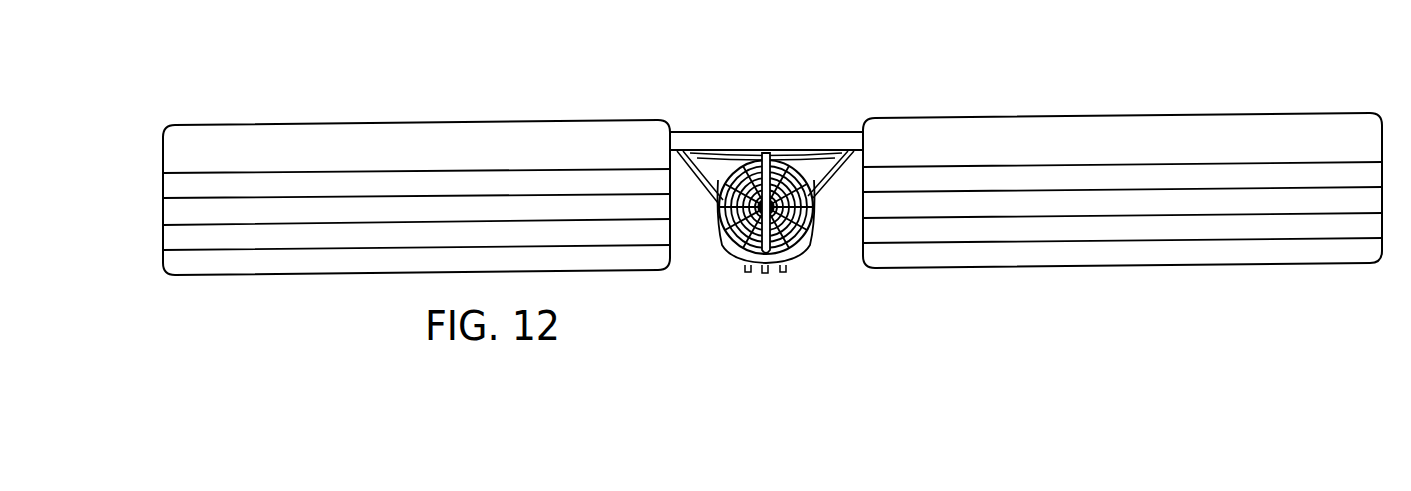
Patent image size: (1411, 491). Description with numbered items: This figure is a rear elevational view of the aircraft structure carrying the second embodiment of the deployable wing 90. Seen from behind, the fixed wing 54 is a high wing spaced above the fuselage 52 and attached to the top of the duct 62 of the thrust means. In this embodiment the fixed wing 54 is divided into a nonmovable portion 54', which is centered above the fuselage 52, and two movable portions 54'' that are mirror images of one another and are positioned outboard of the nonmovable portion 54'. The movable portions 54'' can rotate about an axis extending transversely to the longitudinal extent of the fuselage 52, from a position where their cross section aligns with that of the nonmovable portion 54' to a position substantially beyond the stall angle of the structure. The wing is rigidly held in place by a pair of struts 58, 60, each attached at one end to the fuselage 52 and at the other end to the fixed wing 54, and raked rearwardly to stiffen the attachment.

The deployable wing 90 is at (396, 162).
The fixed wing 54 is at (766, 94).
The nonmovable portion 54' is at (776, 106).
The movable portions 54'' is at (772, 154).
The fuselage 52 is at (838, 352).
The strut 58 is at (836, 178).
The strut 60 is at (689, 188).
The duct 62 is at (724, 242).